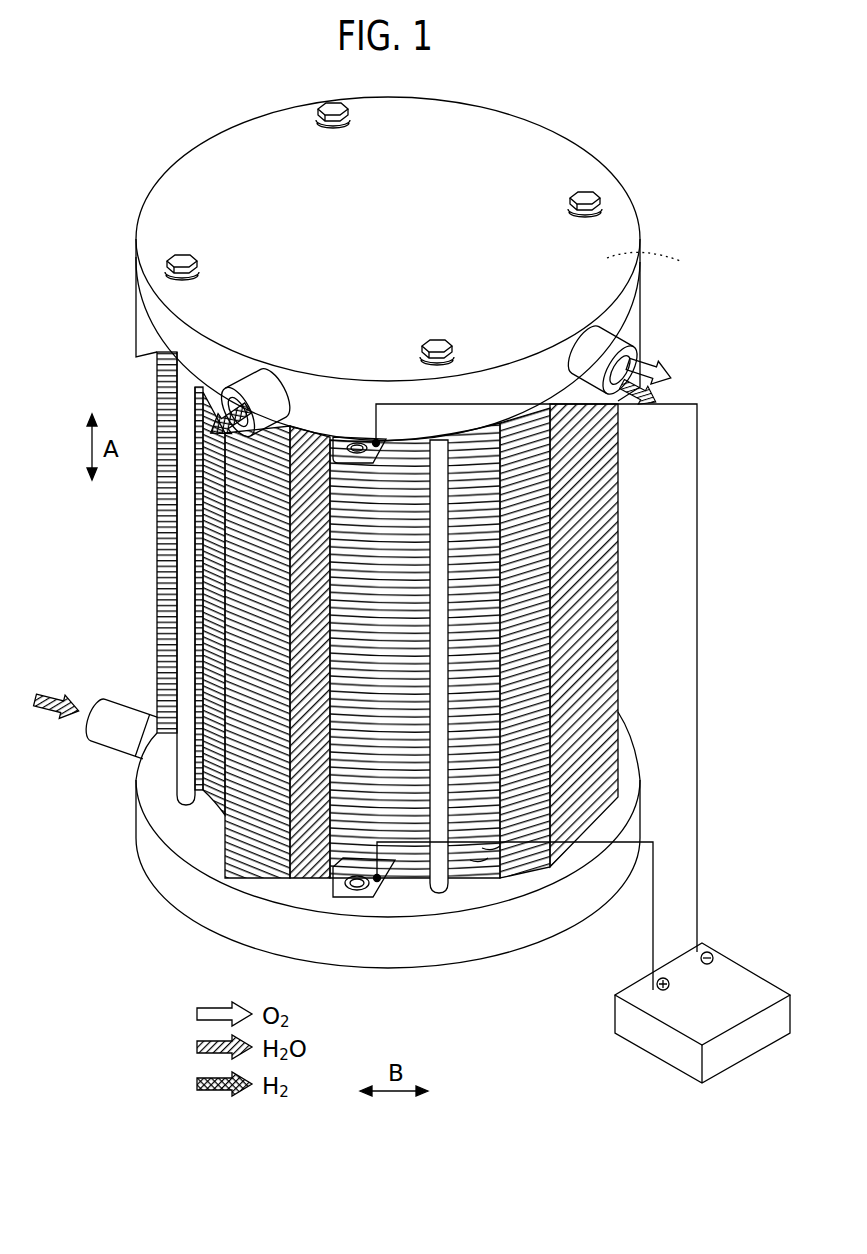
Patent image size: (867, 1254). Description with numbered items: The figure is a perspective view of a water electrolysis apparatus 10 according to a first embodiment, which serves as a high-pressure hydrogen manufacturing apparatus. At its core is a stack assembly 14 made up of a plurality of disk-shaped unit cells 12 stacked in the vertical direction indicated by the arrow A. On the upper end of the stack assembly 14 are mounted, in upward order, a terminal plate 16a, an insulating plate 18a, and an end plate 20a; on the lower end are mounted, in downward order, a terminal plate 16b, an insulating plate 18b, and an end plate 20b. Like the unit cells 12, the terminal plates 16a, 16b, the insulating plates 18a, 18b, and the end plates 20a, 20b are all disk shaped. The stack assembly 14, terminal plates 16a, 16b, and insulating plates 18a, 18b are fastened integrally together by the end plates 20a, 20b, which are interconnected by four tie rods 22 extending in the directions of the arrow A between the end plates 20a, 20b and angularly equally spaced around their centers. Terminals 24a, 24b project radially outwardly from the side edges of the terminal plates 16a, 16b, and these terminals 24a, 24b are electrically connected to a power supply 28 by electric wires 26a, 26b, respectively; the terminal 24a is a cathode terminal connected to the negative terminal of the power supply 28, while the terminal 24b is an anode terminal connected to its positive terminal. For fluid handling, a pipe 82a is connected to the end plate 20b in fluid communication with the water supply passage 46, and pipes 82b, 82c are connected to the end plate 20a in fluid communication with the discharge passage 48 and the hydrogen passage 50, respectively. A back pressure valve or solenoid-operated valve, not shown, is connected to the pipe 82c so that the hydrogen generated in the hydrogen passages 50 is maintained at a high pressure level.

The water electrolysis apparatus 10 is at (553, 85).
The unit cell 12 is at (160, 560).
The stack assembly 14 is at (329, 615).
The terminal plate 16a is at (674, 276).
The terminal plate 16b is at (488, 848).
The insulating plate 18a is at (674, 276).
The insulating plate 18b is at (477, 862).
The end plate 20a is at (572, 168).
The end plate 20b is at (630, 702).
The tie rod 22 is at (443, 895).
The terminal 24a is at (341, 440).
The terminal 24b is at (360, 897).
The electric wire 26a is at (697, 902).
The electric wire 26b is at (653, 940).
The power supply 28 is at (753, 985).
The water supply passage 46 is at (112, 742).
The discharge passage 48 is at (592, 352).
The hydrogen passage 50 is at (258, 388).
The pipe 82a is at (94, 758).
The pipe 82b is at (604, 343).
The pipe 82c is at (250, 364).